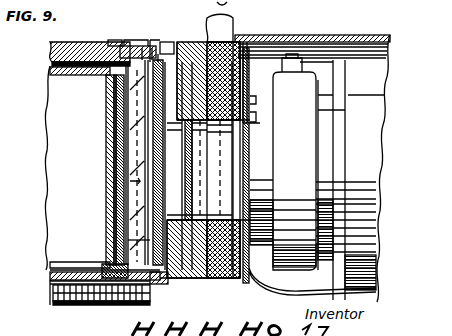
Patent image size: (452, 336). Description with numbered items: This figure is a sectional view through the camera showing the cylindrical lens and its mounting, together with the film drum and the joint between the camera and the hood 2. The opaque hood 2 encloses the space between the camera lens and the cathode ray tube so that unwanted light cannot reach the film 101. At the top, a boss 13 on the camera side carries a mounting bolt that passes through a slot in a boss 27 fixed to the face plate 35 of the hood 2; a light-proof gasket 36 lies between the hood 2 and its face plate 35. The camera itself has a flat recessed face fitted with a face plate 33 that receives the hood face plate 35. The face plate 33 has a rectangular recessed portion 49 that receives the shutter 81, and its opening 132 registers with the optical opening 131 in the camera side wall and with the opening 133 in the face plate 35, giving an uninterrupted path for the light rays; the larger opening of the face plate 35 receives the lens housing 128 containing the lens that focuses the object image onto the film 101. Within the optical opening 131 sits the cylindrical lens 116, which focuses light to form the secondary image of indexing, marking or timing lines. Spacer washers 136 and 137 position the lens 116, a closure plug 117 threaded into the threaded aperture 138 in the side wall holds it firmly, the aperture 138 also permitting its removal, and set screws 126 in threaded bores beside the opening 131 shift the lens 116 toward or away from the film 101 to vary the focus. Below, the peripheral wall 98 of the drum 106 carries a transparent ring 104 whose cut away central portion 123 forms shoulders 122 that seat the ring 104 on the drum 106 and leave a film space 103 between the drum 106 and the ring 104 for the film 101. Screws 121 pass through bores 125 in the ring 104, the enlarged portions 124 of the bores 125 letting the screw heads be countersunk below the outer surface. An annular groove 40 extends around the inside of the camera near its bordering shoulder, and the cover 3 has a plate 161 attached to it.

The hood 2 is at (343, 32).
The cover 3 is at (57, 294).
The boss 13 is at (157, 40).
The boss 27 is at (232, 28).
The face plate 33 is at (243, 118).
The face plate 35 is at (243, 100).
The light-proof gasket 36 is at (238, 43).
The annular groove 40 is at (72, 280).
The rectangular recessed portion 49 is at (192, 184).
The shutter 81 is at (190, 160).
The peripheral wall 98 is at (112, 143).
The film 101 is at (107, 140).
The film space 103 is at (107, 119).
The transparent ring 104 is at (135, 181).
The drum 106 is at (67, 274).
The cylindrical lens 116 is at (124, 197).
The closure plug 117 is at (131, 45).
The screws 121 is at (52, 76).
The shoulders 122 is at (107, 95).
The cut away central portion 123 is at (106, 103).
The enlarged portions 124 is at (51, 51).
The bores 125 is at (106, 88).
The set screws 126 is at (181, 42).
The lens housing 128 is at (313, 177).
The optical opening 131 is at (107, 170).
The opening 132 is at (211, 282).
The opening 133 is at (198, 268).
The spacer washer 136 is at (190, 22).
The spacer washer 137 is at (160, 290).
The threaded aperture 138 is at (114, 44).
The plate 161 is at (78, 290).